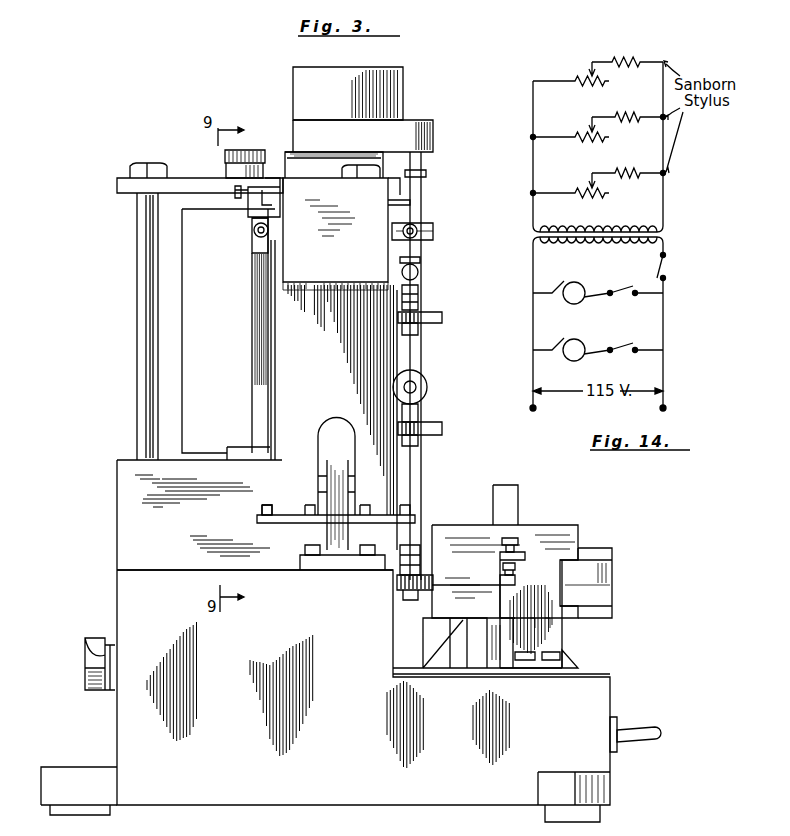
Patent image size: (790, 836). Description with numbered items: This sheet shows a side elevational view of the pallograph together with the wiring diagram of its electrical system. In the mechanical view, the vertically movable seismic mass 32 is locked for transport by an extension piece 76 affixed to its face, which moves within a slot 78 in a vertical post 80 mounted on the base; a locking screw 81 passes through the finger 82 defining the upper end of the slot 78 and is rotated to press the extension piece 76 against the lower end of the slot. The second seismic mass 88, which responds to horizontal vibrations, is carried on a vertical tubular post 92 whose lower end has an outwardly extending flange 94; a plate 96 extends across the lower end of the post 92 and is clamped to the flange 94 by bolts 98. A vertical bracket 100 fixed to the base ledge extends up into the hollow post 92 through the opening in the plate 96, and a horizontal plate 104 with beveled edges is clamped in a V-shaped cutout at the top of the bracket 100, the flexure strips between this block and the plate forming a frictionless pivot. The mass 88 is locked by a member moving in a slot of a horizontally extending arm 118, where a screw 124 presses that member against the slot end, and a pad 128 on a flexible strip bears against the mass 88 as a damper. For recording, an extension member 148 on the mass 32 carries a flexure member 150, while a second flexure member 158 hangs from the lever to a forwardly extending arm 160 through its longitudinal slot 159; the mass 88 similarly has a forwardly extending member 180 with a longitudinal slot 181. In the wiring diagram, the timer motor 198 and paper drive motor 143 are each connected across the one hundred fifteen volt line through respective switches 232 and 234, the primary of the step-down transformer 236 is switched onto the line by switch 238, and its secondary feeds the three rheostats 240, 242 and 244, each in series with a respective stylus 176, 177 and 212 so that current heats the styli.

In FIG. 3, the seismic mass 32 is at (568, 533).
In FIG. 3, the extension piece 76 is at (503, 573).
In FIG. 3, the slot 78 is at (505, 585).
In FIG. 3, the vertical post 80 is at (548, 637).
In FIG. 3, the locking screw 81 is at (515, 538).
In FIG. 3, the finger 82 is at (505, 556).
In FIG. 3, the second seismic mass 88 is at (378, 205).
In FIG. 3, the tubular post 92 is at (360, 356).
In FIG. 3, the flange 94 is at (282, 510).
In FIG. 3, the plate 96 is at (292, 524).
In FIG. 3, the bolts 98 is at (262, 512).
In FIG. 3, the vertical bracket 100 is at (340, 560).
In FIG. 3, the horizontal plate 104 is at (318, 470).
In FIG. 3, the horizontally extending arm 118 is at (258, 247).
In FIG. 3, the screw 124 is at (254, 230).
In FIG. 3, the pad 128 is at (277, 195).
In FIG. 14, the paper drive motor 143 is at (572, 293).
In FIG. 3, the extension member 148 is at (428, 590).
In FIG. 3, the flexure member 150 is at (420, 546).
In FIG. 3, the flexure member 158 is at (418, 404).
In FIG. 3, the longitudinal slot 159 is at (418, 438).
In FIG. 3, the forwardly extending arm 160 is at (438, 430).
In FIG. 14, the stylus 176 is at (612, 170).
In FIG. 14, the stylus 177 is at (612, 114).
In FIG. 3, the forwardly extending member 180 is at (258, 355).
In FIG. 3, the longitudinal slot 181 is at (430, 229).
In FIG. 14, the timer motor 198 is at (572, 350).
In FIG. 14, the stylus 212 is at (620, 58).
In FIG. 3, the switch 232 is at (655, 730).
In FIG. 14, the switch 232 is at (619, 346).
In FIG. 14, the switch 234 is at (614, 289).
In FIG. 14, the step-down transformer 236 is at (529, 239).
In FIG. 14, the switch 238 is at (672, 266).
In FIG. 14, the rheostat 240 is at (603, 192).
In FIG. 3, the rheostat 242 is at (82, 664).
In FIG. 14, the rheostat 242 is at (603, 136).
In FIG. 14, the rheostat 244 is at (603, 80).